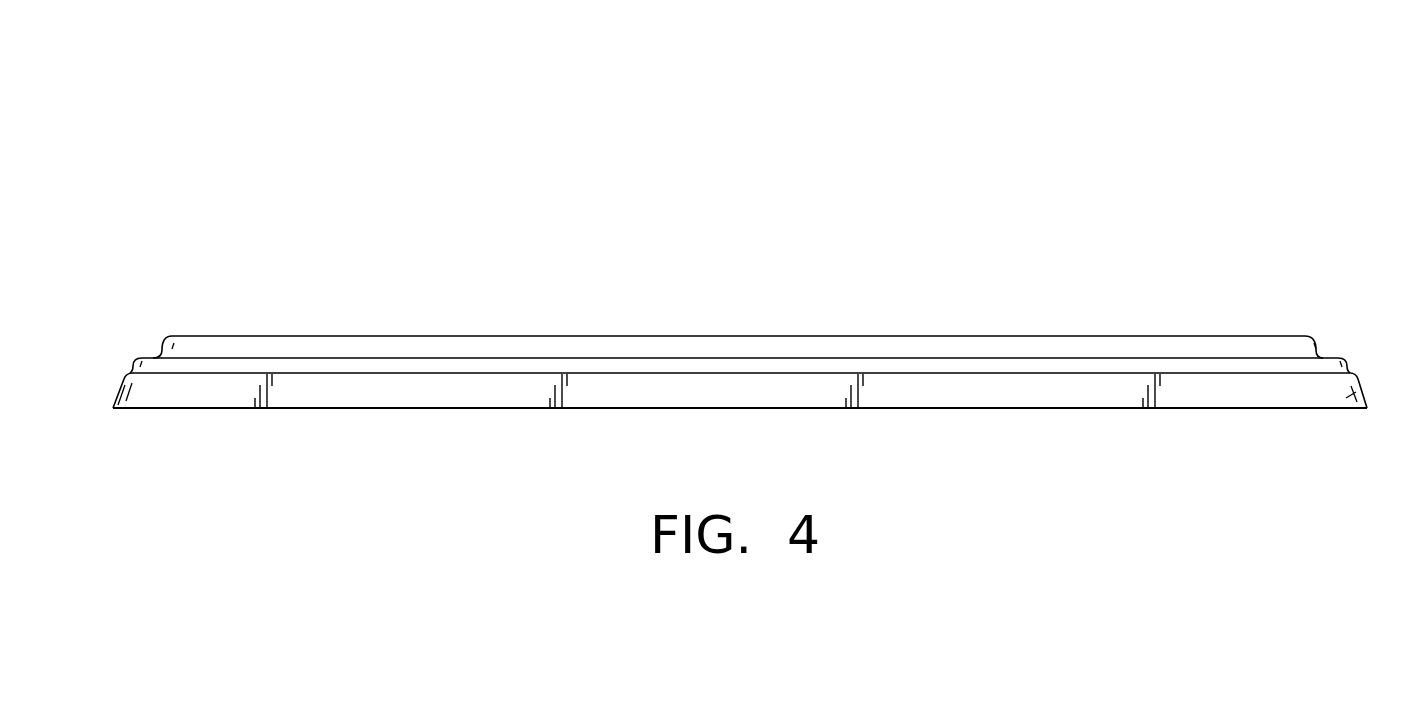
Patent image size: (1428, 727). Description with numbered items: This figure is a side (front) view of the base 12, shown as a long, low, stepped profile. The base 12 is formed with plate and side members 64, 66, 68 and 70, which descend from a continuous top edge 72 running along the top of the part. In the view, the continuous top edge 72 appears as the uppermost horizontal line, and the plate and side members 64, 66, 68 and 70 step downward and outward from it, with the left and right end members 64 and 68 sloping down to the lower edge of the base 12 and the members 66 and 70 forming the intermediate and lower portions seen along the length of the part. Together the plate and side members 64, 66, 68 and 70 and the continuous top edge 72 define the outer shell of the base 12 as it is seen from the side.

The base 12 is at (1318, 113).
The plate and side member 64 is at (115, 393).
The plate and side member 66 is at (730, 385).
The plate and side member 68 is at (1358, 394).
The plate and side member 70 is at (740, 388).
The continuous top edge 72 is at (422, 337).